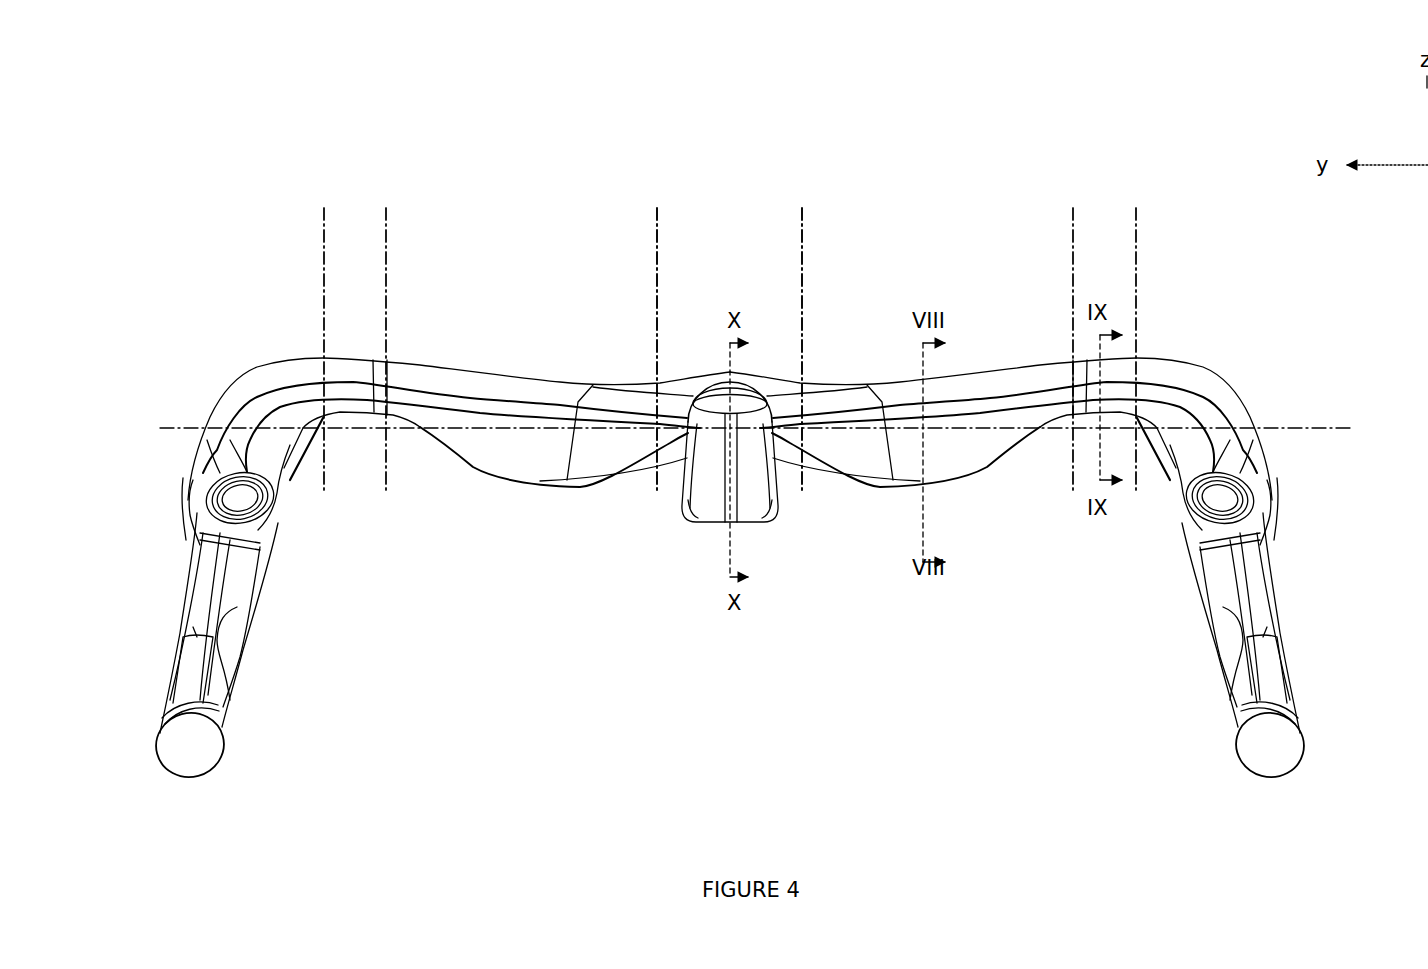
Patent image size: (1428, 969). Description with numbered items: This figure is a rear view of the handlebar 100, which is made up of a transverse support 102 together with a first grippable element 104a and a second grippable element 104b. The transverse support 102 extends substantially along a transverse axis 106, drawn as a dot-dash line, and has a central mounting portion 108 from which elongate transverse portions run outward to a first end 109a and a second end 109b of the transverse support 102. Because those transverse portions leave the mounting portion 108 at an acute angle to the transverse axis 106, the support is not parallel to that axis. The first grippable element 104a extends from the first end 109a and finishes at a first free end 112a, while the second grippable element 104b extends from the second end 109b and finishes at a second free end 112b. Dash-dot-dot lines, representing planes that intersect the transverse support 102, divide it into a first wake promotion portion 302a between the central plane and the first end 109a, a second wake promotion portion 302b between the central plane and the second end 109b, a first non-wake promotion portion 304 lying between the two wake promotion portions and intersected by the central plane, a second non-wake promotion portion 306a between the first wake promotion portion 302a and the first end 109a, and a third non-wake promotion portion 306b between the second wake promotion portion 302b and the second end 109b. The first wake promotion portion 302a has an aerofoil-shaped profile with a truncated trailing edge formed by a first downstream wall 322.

The handlebar 100 is at (881, 136).
The transverse support 102 is at (560, 552).
The first grippable element 104a is at (1263, 610).
The second grippable element 104b is at (205, 577).
The transverse axis 106 is at (1323, 426).
The mounting portion 108 is at (683, 534).
The first end 109a is at (1157, 390).
The second end 109b is at (317, 393).
The first free end 112a is at (1268, 748).
The second free end 112b is at (193, 747).
The first wake promotion portion 302a is at (937, 349).
The second wake promotion portion 302b is at (521, 349).
The first non-wake promotion portion 304 is at (729, 349).
The second non-wake promotion portion 306a is at (1103, 233).
The third non-wake promotion portion 306b is at (359, 224).
The first downstream wall 322 is at (958, 445).